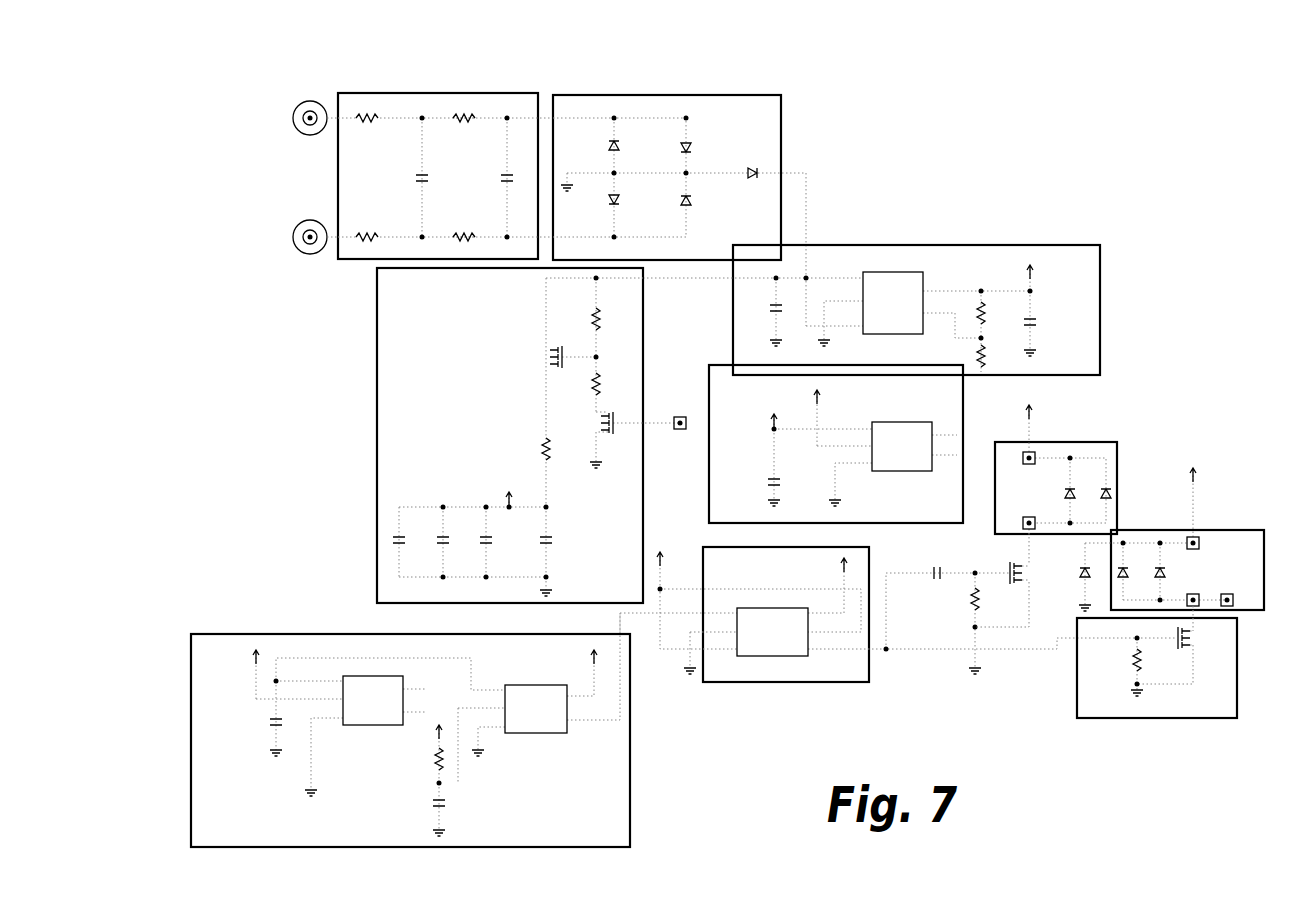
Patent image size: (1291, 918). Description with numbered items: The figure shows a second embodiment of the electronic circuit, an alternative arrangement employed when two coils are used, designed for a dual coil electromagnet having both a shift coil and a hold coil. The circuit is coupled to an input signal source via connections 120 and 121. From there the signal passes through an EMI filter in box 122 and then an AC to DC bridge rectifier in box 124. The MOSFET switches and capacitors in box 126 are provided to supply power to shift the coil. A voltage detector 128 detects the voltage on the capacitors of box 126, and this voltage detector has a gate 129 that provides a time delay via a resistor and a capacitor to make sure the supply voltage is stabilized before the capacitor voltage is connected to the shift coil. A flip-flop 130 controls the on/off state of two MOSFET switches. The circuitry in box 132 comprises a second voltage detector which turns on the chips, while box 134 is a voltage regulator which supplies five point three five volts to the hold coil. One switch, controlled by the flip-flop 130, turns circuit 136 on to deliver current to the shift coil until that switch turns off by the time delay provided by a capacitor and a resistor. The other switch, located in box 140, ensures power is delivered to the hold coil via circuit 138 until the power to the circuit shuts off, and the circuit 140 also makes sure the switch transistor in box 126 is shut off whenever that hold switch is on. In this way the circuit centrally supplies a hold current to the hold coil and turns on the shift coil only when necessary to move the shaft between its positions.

The connection 120 is at (298, 104).
The connection 121 is at (296, 238).
The EMI filter 122 is at (463, 92).
The AC to DC bridge rectifier 124 is at (729, 93).
The MOSFET switches and capacitors box 126 is at (375, 400).
The voltage detector 128 is at (410, 710).
The gate 129 is at (537, 723).
The flip-flop 130 is at (802, 678).
The second voltage detector 132 is at (710, 370).
The voltage regulator 134 is at (905, 238).
The shift coil circuit 136 is at (1083, 445).
The hold coil circuit 138 is at (1228, 533).
The Q4 box 140 is at (1170, 710).